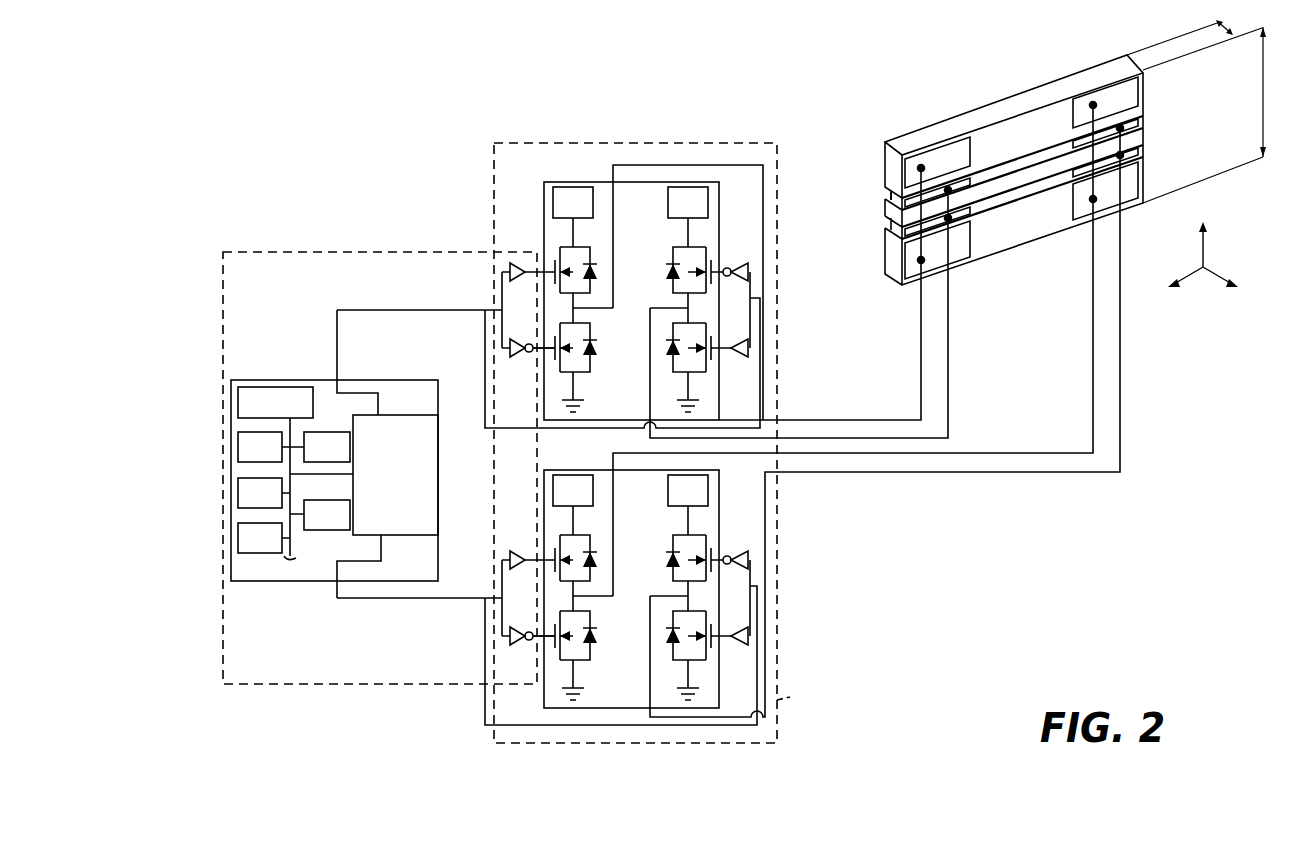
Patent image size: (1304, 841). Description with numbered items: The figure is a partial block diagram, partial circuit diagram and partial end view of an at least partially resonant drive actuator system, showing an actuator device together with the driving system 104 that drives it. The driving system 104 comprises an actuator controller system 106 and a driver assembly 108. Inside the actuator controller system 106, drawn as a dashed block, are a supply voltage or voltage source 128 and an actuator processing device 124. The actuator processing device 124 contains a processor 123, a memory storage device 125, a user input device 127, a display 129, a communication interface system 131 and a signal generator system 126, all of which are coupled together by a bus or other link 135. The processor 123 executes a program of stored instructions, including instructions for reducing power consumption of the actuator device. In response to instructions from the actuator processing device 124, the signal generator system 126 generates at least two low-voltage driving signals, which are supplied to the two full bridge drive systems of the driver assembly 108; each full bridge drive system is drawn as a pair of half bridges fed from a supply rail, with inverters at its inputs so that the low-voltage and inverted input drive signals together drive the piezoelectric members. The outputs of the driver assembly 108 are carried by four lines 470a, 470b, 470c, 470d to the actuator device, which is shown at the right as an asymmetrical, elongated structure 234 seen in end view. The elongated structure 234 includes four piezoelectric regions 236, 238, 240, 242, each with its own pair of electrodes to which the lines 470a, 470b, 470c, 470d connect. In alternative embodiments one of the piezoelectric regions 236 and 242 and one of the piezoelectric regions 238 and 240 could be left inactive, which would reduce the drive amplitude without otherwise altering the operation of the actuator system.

The driving system 104 is at (240, 93).
The actuator controller system 106 is at (273, 246).
The driver assembly 108 is at (790, 697).
The processor 123 is at (260, 447).
The actuator processing device 124 is at (383, 380).
The memory storage device 125 is at (260, 493).
The signal generator system 126 is at (395, 475).
The user input device 127 is at (260, 538).
The supply voltage or voltage source 128 is at (275, 380).
The display 129 is at (327, 447).
The communication interface system 131 is at (327, 515).
The bus or other link 135 is at (300, 557).
The asymmetrical, elongated structure 234 is at (995, 106).
The piezoelectric region 236 is at (1022, 157).
The piezoelectric region 238 is at (1022, 177).
The piezoelectric region 240 is at (888, 185).
The piezoelectric region 242 is at (1022, 202).
The first drive line 470a is at (838, 418).
The second drive line 470b is at (1012, 438).
The third drive line 470c is at (865, 455).
The fourth drive line 470d is at (1025, 474).